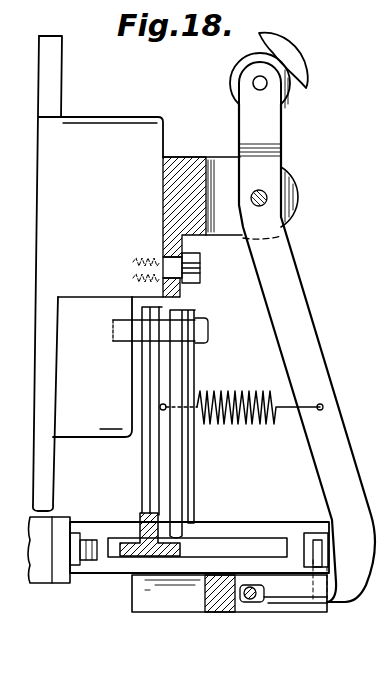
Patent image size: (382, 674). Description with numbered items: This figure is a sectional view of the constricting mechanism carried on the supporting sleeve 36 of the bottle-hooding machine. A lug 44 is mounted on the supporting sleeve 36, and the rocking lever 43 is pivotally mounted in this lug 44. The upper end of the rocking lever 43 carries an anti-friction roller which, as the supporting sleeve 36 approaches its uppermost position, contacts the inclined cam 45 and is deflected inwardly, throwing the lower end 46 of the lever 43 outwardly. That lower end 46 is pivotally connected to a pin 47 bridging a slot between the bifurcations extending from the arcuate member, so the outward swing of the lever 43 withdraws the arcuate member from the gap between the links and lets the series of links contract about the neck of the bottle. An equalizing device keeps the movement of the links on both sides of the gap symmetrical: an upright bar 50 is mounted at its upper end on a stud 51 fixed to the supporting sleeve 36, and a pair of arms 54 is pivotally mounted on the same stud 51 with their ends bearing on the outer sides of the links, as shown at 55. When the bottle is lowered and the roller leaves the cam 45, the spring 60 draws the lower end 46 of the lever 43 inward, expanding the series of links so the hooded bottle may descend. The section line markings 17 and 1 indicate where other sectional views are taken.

The supporting sleeve 36 is at (170, 101).
The lug 44 is at (218, 143).
The stud 51 is at (168, 307).
The rocking lever 43 is at (283, 293).
The inclined cam 45 is at (298, 57).
The arms 54 is at (175, 387).
The upright bar 50 is at (150, 448).
The spring 60 is at (277, 393).
The bearing point of arms on links 55 is at (188, 530).
The lower end of lever 46 is at (302, 593).
The pin 47 is at (257, 605).
The section line 17 is at (143, 588).
The section line 1 is at (349, 598).